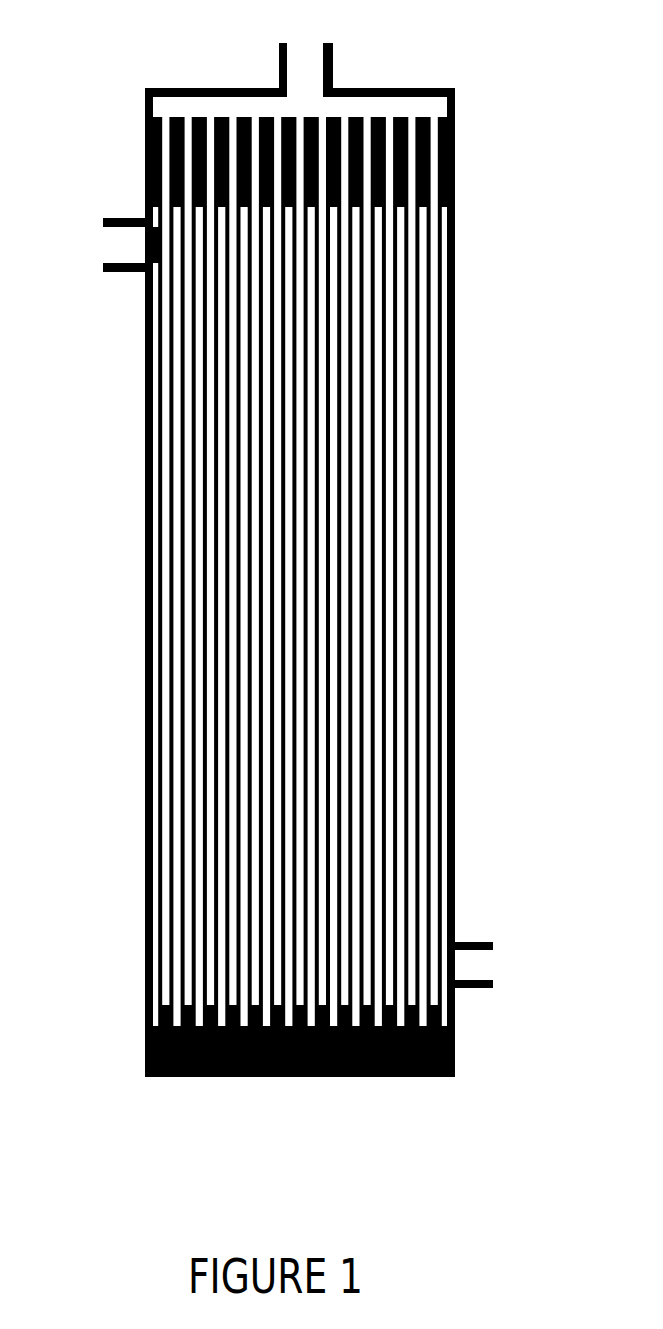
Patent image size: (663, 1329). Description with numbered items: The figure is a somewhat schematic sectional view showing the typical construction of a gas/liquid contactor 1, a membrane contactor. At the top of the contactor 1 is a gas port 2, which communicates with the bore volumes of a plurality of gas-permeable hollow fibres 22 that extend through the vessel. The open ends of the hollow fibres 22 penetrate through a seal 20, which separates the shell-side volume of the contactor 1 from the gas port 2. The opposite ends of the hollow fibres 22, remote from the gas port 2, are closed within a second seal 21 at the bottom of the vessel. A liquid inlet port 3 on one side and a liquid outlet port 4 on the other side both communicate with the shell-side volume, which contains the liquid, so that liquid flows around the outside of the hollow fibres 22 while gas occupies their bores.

The gas/liquid contactor 1 is at (302, 540).
The gas port 2 is at (323, 66).
The liquid inlet port 3 is at (125, 262).
The liquid outlet port 4 is at (470, 951).
The seal 20 is at (457, 154).
The seal 21 is at (145, 1053).
The gas-permeable hollow fibres 22 is at (438, 337).